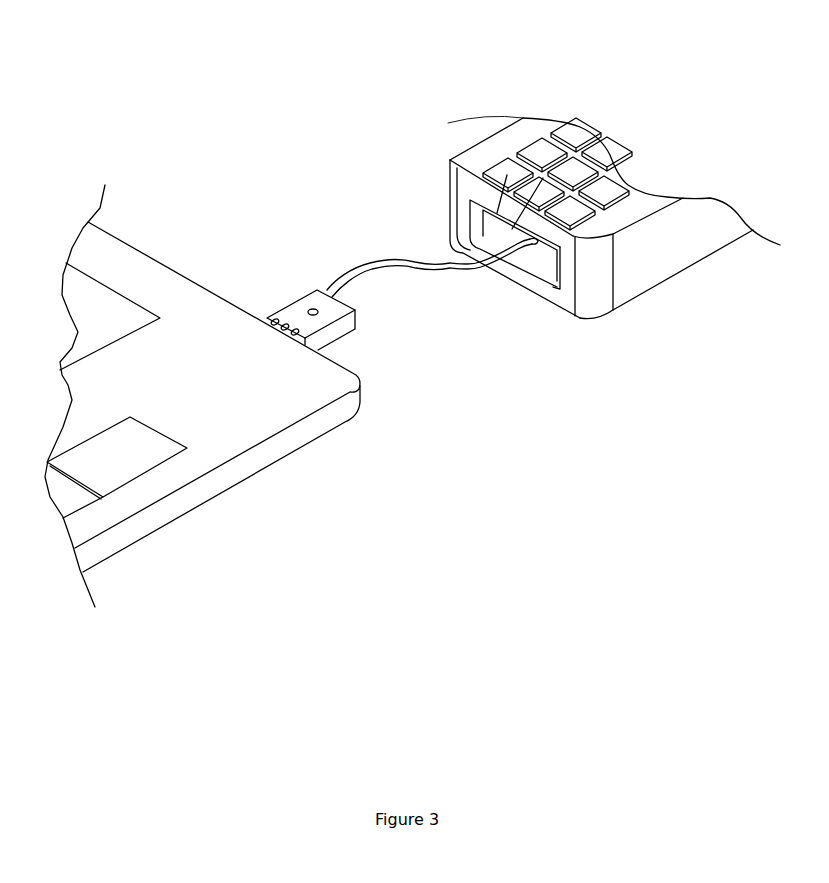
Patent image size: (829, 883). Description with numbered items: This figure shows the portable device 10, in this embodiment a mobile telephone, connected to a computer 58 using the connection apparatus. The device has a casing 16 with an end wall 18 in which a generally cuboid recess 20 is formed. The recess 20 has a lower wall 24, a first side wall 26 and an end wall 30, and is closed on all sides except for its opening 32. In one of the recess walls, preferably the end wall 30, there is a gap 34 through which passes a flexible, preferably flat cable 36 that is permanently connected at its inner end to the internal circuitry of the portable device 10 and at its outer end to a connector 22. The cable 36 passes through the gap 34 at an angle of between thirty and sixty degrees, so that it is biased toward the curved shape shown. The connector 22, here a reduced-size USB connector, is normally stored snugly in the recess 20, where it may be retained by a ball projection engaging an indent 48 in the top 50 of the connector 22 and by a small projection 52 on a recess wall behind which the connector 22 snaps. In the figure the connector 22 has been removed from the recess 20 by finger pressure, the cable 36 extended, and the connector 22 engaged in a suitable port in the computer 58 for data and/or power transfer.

The portable device 10 is at (503, 128).
The casing 16 is at (448, 164).
The end wall 18 is at (463, 200).
The recess 20 is at (598, 141).
The connector 22 is at (337, 330).
The lower wall 24 is at (540, 267).
The first side wall 26 is at (480, 215).
The end wall 30 is at (612, 165).
The opening 32 is at (562, 253).
The gap 34 is at (575, 240).
The cable 36 is at (430, 268).
The indent 48 is at (319, 312).
The top 50 is at (298, 303).
The projection 52 is at (615, 310).
The computer 58 is at (240, 437).